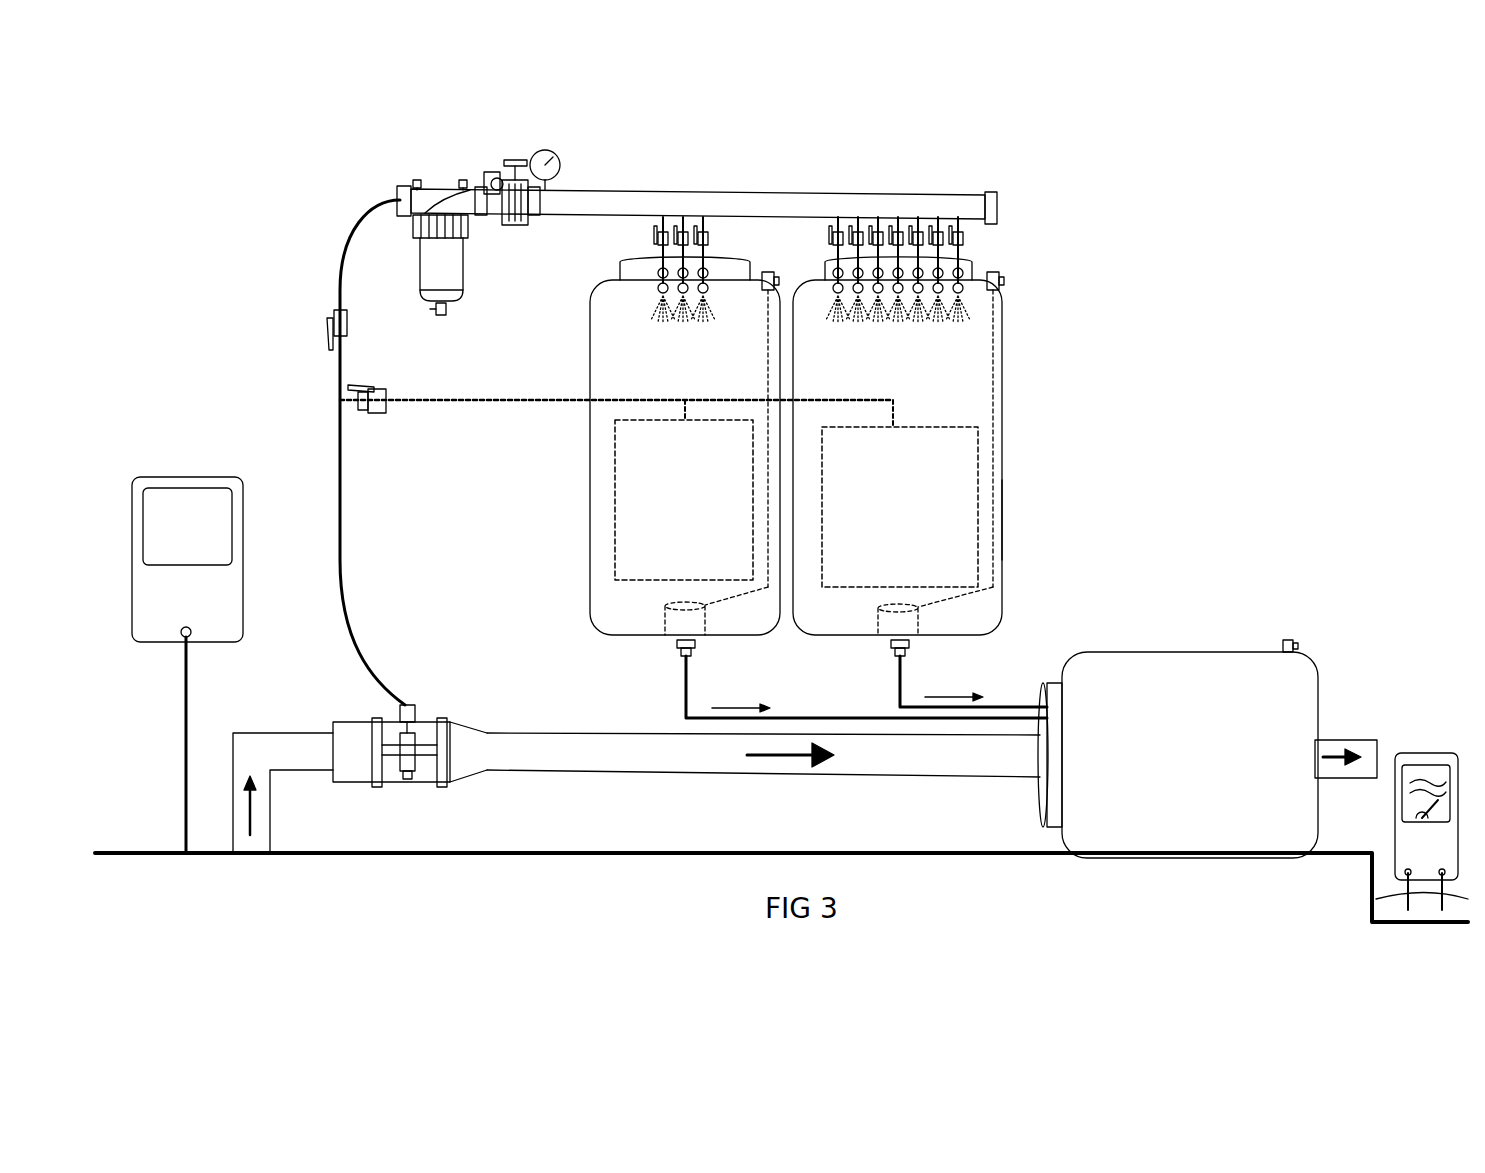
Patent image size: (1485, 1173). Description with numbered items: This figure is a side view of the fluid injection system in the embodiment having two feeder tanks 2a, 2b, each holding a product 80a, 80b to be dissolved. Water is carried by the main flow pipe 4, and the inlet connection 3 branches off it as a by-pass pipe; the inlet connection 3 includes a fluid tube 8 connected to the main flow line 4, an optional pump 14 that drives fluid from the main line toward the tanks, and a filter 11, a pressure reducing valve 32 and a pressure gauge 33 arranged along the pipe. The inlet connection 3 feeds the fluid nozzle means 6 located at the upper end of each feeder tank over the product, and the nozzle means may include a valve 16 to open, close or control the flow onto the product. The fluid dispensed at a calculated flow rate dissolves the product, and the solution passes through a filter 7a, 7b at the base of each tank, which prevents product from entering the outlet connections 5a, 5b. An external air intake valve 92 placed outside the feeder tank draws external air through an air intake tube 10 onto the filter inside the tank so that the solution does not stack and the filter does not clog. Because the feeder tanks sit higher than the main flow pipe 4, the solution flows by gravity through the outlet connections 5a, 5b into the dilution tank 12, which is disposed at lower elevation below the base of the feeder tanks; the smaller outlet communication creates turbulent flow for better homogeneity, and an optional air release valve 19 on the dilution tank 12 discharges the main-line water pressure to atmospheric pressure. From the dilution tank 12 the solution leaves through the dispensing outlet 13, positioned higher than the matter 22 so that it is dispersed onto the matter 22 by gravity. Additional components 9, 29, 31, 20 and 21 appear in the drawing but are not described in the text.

The inlet connection 3 is at (905, 190).
The fluid nozzle means 6 is at (998, 214).
The valve 16 is at (962, 243).
The external air intake valve 92 is at (1005, 285).
The feeder tank 2b is at (1003, 372).
The product 80b is at (952, 420).
The air intake tube 10 is at (992, 523).
The pressure reducing valve 32 is at (508, 170).
The pressure gauge 33 is at (560, 163).
The filter 11 is at (400, 186).
The valve 9 is at (327, 322).
The control line 31 is at (487, 395).
The controller 20 is at (162, 477).
The fluid tube 8 is at (338, 437).
The control valve 29 is at (375, 412).
The product 80a is at (615, 455).
The feeder tank 2a is at (590, 552).
The filter 7a is at (672, 627).
The filter 7b is at (890, 627).
The outlet connection 5a is at (846, 702).
The outlet connection 5b is at (1005, 703).
The main flow pipe 4 is at (268, 733).
The pump 14 is at (418, 705).
The dilution tank 12 is at (1185, 652).
The air release valve 19 is at (1288, 640).
The dispensing outlet 13 is at (1357, 740).
The meter 21 is at (1435, 753).
The matter 22 is at (1385, 912).